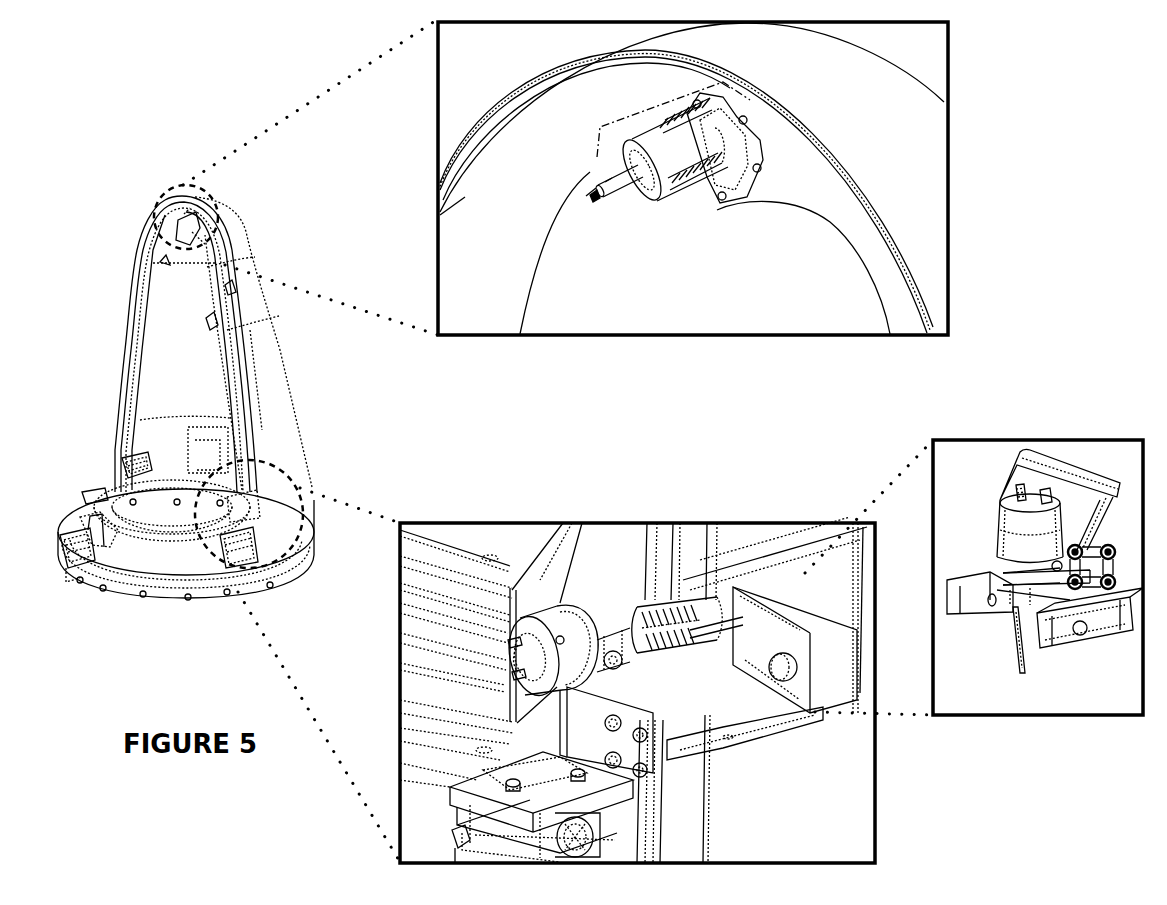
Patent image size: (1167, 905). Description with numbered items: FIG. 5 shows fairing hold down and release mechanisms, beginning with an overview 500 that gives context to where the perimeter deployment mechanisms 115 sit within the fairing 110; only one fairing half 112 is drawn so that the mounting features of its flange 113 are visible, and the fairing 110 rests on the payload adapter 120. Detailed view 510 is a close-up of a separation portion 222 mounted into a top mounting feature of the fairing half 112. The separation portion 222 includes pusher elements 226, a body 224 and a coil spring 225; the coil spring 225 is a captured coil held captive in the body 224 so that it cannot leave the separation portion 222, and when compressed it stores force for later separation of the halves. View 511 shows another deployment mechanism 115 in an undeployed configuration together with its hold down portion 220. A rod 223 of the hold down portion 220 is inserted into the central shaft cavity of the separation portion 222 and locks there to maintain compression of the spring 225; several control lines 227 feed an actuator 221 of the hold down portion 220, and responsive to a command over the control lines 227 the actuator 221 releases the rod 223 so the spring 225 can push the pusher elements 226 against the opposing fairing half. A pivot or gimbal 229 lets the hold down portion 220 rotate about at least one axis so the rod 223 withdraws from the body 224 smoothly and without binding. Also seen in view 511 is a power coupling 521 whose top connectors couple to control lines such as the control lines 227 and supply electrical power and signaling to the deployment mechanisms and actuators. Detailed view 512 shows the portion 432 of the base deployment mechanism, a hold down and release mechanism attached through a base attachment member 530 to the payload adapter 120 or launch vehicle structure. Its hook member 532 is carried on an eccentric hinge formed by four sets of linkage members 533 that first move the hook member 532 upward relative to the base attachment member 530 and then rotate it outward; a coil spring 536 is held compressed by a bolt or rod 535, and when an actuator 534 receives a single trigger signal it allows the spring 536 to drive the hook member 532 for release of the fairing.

The overview 500 is at (113, 238).
The fairing 110 is at (246, 220).
The fairing half 112 is at (268, 410).
The flange 113 is at (222, 353).
The deployment mechanisms 115 is at (736, 272).
The payload adapter 120 is at (176, 567).
The portion 432 is at (86, 566).
The power coupling 521 is at (124, 472).
The detailed view 510 is at (955, 68).
The view 511 is at (580, 518).
The detailed view 512 is at (982, 435).
The separation portion 222 is at (662, 107).
The body 224 is at (661, 206).
The coil spring 225 is at (689, 181).
The pusher elements 226 is at (601, 197).
The hold down portion 220 is at (556, 603).
The actuator 221 is at (556, 623).
The rod 223 is at (727, 632).
The control lines 227 is at (520, 674).
The pivot or gimbal 229 is at (610, 664).
The base attachment member 530 is at (1102, 627).
The hook member 532 is at (1115, 487).
The linkage members 533 is at (1119, 580).
The actuator 534 is at (1018, 531).
The bolt or rod 535 is at (1005, 665).
The coil spring 536 is at (1010, 585).